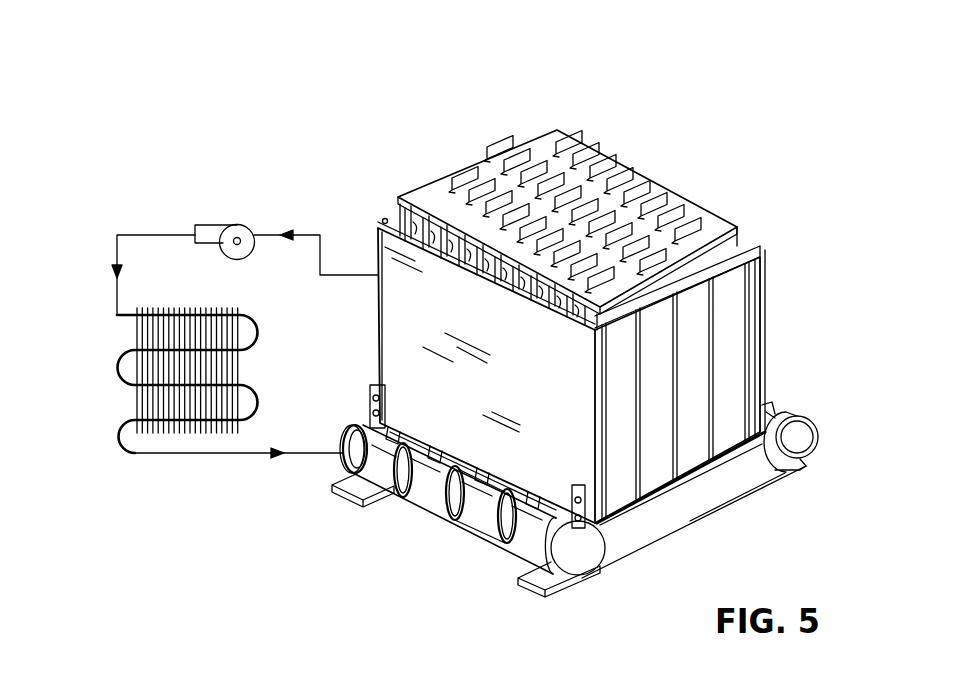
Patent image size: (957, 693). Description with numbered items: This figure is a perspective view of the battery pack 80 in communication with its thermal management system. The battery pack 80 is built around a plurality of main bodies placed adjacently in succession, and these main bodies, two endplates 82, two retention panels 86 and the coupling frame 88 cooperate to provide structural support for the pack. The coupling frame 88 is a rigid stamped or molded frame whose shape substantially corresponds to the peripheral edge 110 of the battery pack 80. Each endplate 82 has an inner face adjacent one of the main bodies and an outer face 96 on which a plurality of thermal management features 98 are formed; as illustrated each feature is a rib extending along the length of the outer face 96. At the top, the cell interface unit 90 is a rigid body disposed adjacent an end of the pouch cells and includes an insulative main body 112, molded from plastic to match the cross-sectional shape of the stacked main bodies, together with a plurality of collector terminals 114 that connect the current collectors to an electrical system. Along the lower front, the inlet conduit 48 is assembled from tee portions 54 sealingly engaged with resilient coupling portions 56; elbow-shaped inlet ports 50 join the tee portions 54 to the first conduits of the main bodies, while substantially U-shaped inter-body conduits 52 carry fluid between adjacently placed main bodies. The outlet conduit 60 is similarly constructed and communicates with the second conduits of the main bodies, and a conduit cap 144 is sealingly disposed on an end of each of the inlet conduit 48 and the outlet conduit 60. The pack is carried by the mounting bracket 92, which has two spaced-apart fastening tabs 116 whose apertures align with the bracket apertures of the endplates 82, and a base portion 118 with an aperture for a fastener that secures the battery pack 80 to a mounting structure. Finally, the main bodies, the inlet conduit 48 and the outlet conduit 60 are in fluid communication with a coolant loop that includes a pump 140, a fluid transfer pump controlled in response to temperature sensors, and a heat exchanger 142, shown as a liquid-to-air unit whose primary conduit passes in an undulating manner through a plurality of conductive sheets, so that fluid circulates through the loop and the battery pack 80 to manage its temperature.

The battery pack 80 is at (699, 124).
The pump 140 is at (216, 224).
The heat exchanger 142 is at (118, 360).
The retention panel 86 is at (378, 338).
The coupling frame 88 is at (748, 263).
The peripheral edge 110 is at (753, 247).
The insulative main body 112 is at (642, 186).
The cell interface unit 90 is at (614, 170).
The collector terminals 114 is at (548, 162).
The thermal management features 98 is at (712, 393).
The outer face 96 is at (667, 465).
The endplate 82 is at (727, 461).
The mounting bracket 92 is at (708, 528).
The outlet conduit 60 is at (771, 402).
The conduit cap 144 is at (790, 440).
The inlet conduit 48 is at (360, 430).
The tee portions 54 is at (432, 500).
The coupling portions 56 is at (478, 520).
The inter-body conduit 52 is at (451, 452).
The inlet port 50 is at (480, 470).
The fastening tab 116 is at (372, 392).
The base portion 118 is at (351, 491).